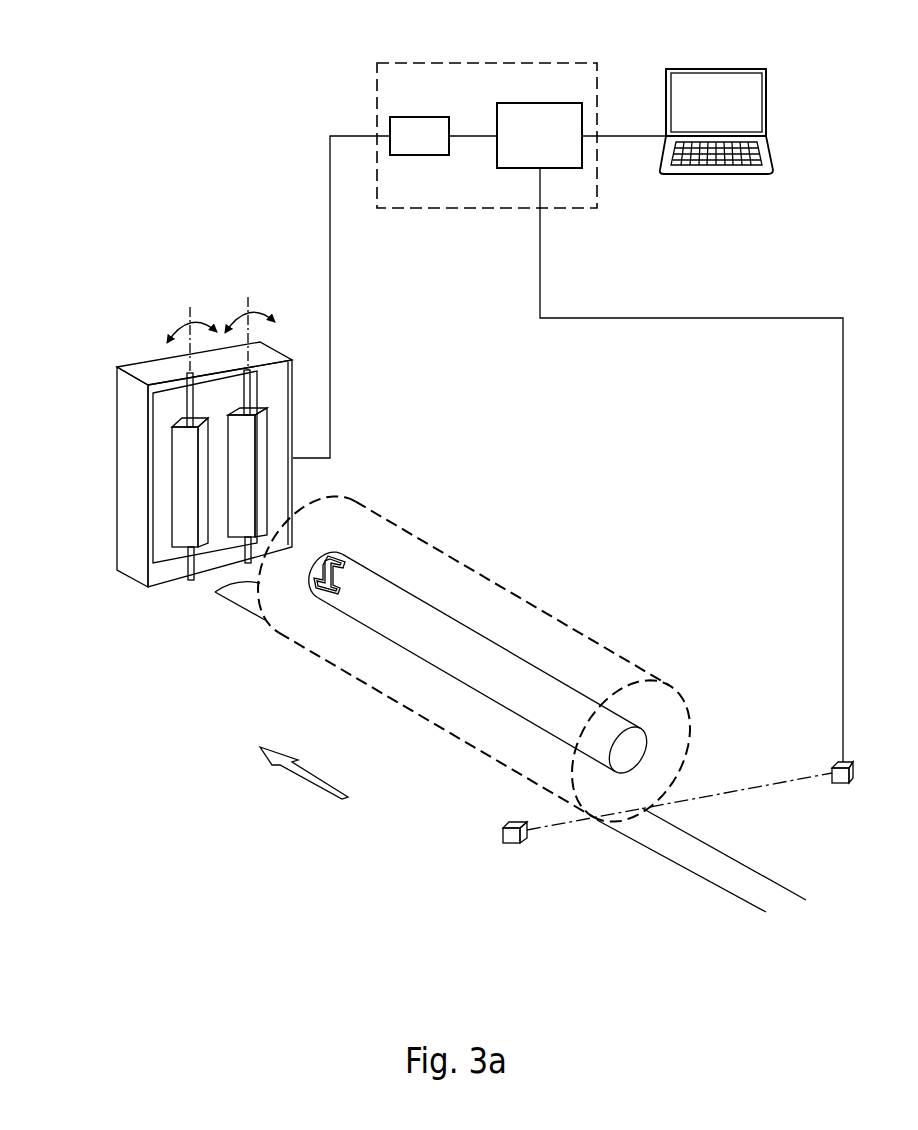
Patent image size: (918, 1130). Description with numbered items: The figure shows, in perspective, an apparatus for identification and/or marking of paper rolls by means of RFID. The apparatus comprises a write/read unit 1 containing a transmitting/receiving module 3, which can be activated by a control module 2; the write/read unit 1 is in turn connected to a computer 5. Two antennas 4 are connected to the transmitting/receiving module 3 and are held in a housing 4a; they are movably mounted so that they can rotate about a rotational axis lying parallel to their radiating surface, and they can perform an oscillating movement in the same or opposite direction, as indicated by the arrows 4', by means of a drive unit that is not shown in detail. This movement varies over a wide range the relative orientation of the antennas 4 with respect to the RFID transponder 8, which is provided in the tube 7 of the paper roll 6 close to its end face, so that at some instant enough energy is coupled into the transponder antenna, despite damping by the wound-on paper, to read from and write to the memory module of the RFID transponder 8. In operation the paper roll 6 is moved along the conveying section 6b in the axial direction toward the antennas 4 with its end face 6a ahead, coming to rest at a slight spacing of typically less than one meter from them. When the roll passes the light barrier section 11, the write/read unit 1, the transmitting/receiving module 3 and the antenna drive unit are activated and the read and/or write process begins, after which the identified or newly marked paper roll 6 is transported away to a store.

The write/read unit 1 is at (486, 63).
The control module 2 is at (538, 103).
The transmitting/receiving module 3 is at (420, 117).
The antennas 4 is at (191, 449).
The arrows 4' is at (221, 311).
The housing of deflection device 4a is at (127, 437).
The computer 5 is at (712, 69).
The paper roll 6 is at (474, 641).
The end face 6a is at (310, 500).
The conveying section 6b is at (722, 877).
The tube 7 is at (518, 655).
The RFID transponder 8 is at (347, 565).
The light barrier section 11 is at (832, 767).